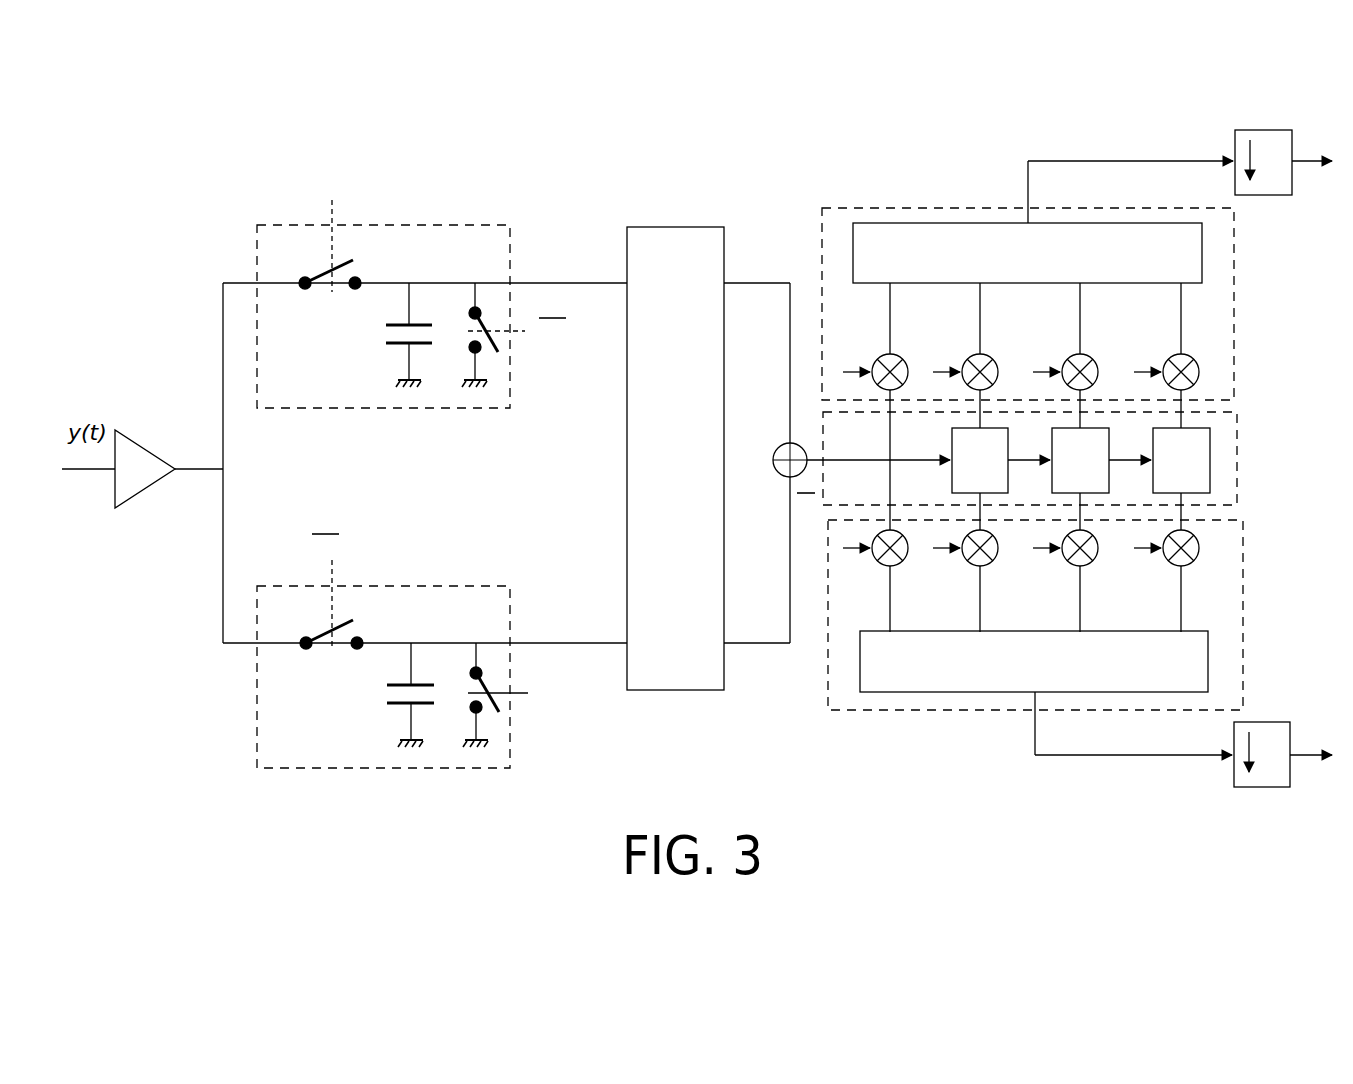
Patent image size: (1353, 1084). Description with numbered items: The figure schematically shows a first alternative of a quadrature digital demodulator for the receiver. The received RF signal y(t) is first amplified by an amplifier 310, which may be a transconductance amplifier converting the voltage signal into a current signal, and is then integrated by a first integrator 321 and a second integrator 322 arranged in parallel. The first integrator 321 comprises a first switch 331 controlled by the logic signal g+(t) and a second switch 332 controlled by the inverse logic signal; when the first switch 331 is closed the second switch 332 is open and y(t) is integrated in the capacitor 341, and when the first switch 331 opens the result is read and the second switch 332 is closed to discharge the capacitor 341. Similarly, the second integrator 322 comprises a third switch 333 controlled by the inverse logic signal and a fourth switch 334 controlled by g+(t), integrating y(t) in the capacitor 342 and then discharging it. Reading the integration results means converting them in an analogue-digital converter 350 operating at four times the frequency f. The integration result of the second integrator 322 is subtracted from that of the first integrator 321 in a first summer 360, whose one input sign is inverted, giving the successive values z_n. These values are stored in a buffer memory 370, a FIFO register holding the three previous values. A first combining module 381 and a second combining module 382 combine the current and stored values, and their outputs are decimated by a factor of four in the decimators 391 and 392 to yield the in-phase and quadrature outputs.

The amplifier 310 is at (116, 484).
The first integrator 321 is at (265, 226).
The second integrator 322 is at (258, 716).
The first switch 331 is at (349, 262).
The second switch 332 is at (492, 315).
The third switch 333 is at (351, 618).
The fourth switch 334 is at (488, 668).
The capacitor 341 is at (425, 325).
The capacitor 342 is at (427, 675).
The analogue-digital converter 350 is at (676, 229).
The first summer 360 is at (787, 446).
The buffer memory (FIFO register) 370 is at (1237, 442).
The first combining module 381 is at (850, 207).
The second combining module 382 is at (866, 712).
The decimator 391 is at (1237, 143).
The decimator 392 is at (1234, 769).